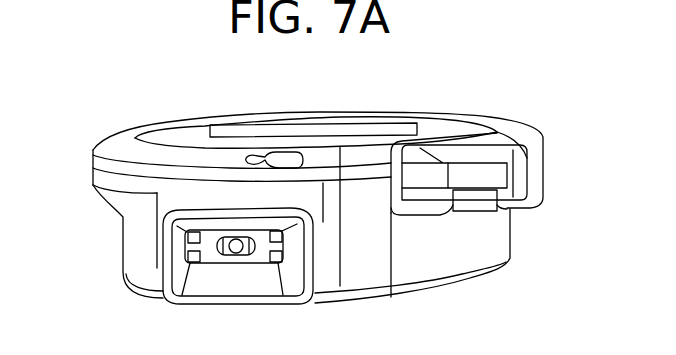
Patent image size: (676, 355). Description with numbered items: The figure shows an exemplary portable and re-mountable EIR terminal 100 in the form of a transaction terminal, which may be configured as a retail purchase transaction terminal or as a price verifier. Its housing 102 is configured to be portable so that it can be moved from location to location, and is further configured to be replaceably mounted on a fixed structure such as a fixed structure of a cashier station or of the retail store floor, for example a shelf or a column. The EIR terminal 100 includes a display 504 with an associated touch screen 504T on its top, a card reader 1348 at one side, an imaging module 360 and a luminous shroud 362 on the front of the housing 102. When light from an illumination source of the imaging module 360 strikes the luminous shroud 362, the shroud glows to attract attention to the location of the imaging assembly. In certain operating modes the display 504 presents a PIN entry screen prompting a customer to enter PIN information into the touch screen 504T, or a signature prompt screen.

The EIR terminal 100 is at (283, 100).
The housing 102 is at (117, 199).
The imaging module 360 is at (243, 262).
The luminous shroud 362 is at (297, 206).
The display 504 is at (320, 93).
The touch screen 504T is at (338, 125).
The card reader 1348 is at (485, 215).